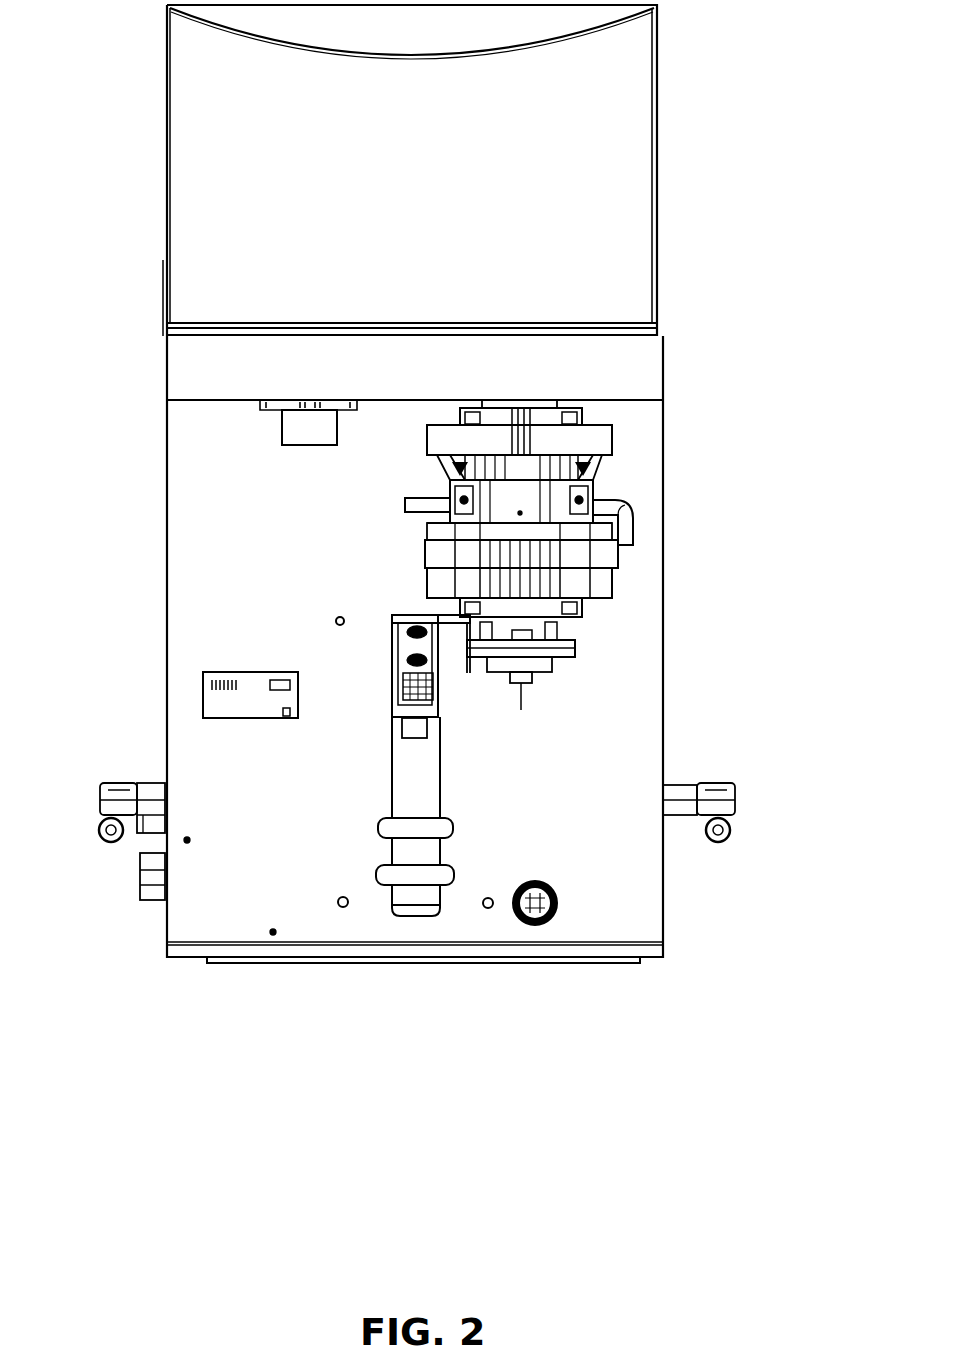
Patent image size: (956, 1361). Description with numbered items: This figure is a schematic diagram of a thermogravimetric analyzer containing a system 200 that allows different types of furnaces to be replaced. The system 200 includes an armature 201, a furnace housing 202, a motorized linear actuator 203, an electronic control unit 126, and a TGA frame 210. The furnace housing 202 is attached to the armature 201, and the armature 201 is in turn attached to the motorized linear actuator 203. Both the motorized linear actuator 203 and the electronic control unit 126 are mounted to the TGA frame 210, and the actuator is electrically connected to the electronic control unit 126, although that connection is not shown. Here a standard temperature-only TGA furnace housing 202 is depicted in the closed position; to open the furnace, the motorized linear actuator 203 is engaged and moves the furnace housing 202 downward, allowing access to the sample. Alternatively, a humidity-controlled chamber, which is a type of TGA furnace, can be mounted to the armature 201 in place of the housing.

The system 200 is at (303, 1018).
The TGA frame 210 is at (663, 570).
The furnace housing 202 is at (433, 440).
The armature 201 is at (467, 673).
The motorized linear actuator 203 is at (413, 753).
The electronic control unit 126 is at (250, 672).